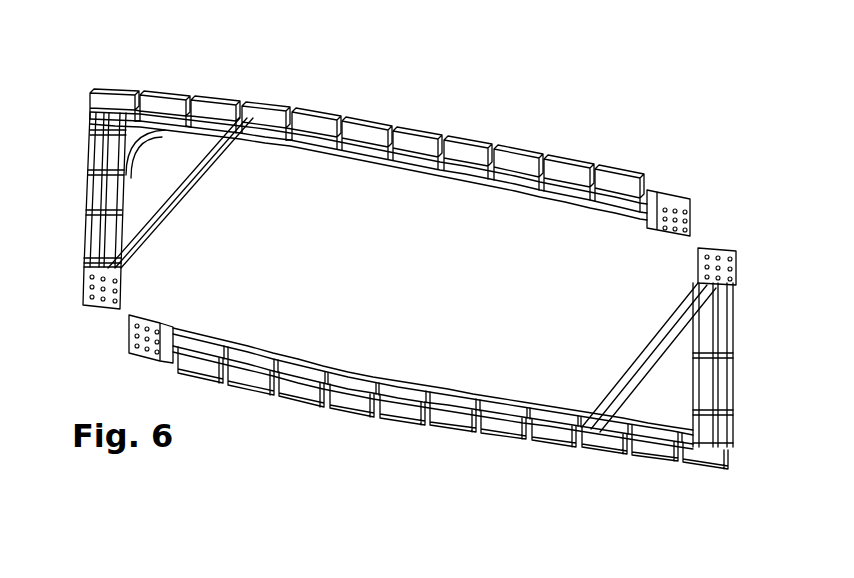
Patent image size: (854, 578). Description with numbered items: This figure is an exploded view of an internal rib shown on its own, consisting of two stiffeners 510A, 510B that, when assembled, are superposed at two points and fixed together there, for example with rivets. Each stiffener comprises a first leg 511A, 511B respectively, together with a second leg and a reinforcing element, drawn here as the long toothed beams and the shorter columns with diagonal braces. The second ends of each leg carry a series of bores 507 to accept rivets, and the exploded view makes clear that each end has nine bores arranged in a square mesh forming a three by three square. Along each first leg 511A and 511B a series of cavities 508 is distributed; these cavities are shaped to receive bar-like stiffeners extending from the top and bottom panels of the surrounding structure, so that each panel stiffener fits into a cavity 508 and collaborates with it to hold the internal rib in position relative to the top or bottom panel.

The bores 507 is at (685, 210).
The cavities 508 is at (295, 107).
The first stiffener 510A is at (427, 118).
The second stiffener 510B is at (358, 440).
The first leg of the first stiffener 511A is at (468, 158).
The first leg of the second stiffener 511B is at (303, 390).